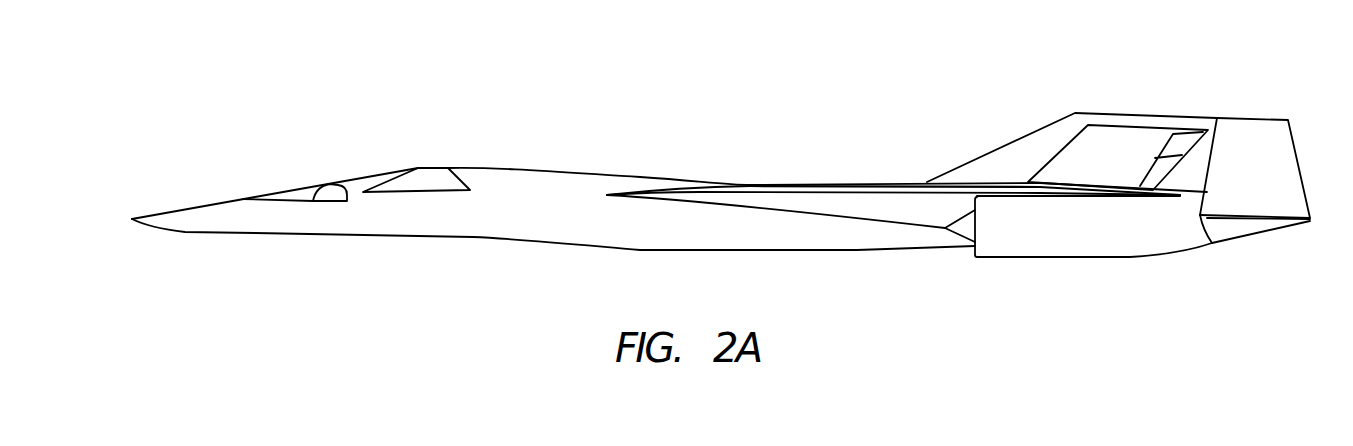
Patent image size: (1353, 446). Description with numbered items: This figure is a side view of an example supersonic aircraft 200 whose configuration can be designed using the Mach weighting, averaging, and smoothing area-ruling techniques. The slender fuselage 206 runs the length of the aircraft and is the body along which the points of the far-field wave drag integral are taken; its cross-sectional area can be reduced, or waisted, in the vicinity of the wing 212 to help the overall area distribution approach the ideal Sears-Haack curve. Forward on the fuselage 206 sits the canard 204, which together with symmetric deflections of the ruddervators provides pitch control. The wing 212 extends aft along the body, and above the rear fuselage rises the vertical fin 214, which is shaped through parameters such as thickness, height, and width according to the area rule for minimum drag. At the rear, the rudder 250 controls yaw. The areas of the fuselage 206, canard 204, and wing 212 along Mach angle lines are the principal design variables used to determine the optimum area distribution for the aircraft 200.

The supersonic aircraft 200 is at (721, 146).
The canard 204 is at (442, 167).
The fuselage 206 is at (632, 175).
The wing 212 is at (897, 187).
The vertical fin 214 is at (1145, 116).
The rudder 250 is at (1240, 117).